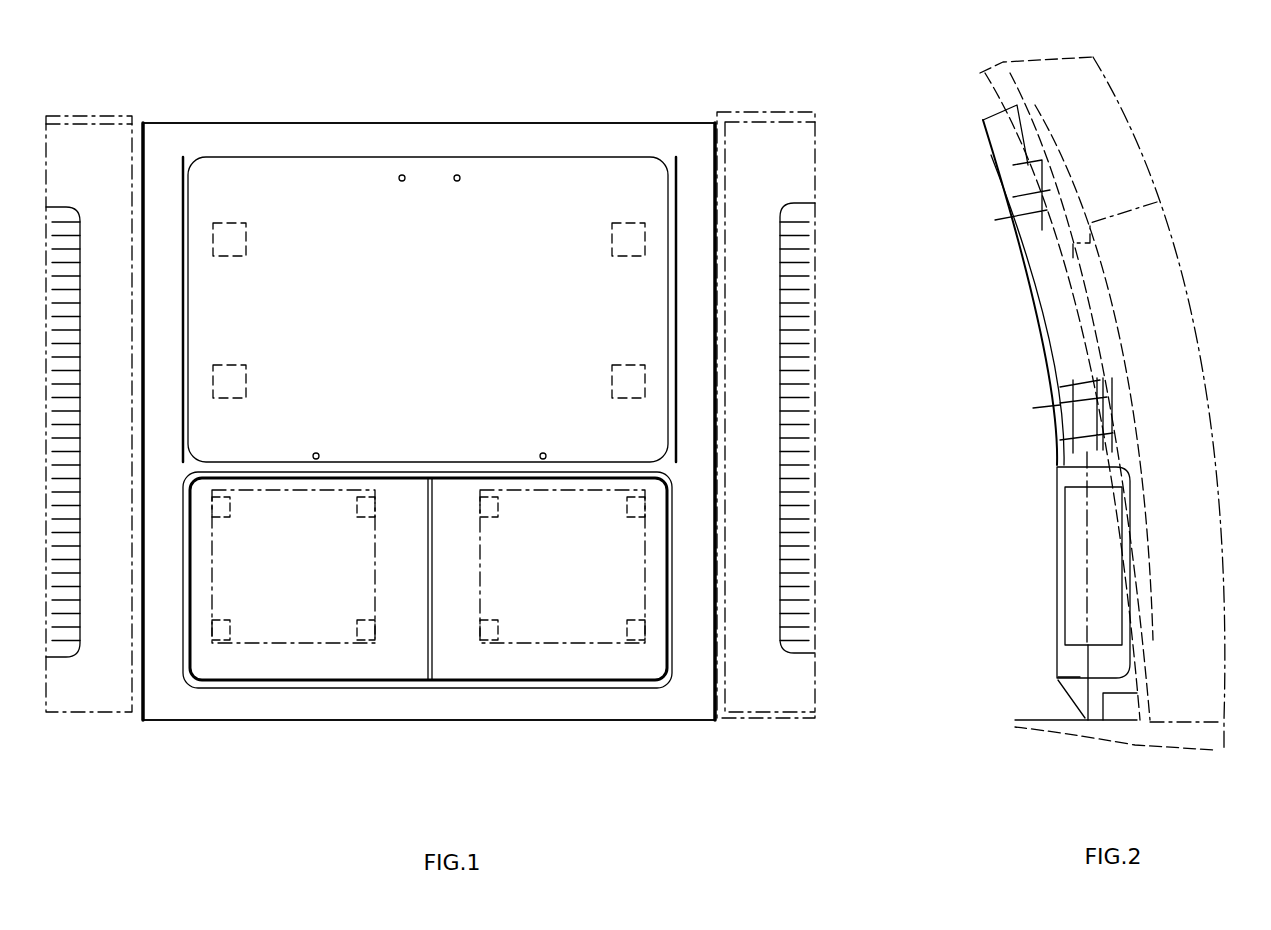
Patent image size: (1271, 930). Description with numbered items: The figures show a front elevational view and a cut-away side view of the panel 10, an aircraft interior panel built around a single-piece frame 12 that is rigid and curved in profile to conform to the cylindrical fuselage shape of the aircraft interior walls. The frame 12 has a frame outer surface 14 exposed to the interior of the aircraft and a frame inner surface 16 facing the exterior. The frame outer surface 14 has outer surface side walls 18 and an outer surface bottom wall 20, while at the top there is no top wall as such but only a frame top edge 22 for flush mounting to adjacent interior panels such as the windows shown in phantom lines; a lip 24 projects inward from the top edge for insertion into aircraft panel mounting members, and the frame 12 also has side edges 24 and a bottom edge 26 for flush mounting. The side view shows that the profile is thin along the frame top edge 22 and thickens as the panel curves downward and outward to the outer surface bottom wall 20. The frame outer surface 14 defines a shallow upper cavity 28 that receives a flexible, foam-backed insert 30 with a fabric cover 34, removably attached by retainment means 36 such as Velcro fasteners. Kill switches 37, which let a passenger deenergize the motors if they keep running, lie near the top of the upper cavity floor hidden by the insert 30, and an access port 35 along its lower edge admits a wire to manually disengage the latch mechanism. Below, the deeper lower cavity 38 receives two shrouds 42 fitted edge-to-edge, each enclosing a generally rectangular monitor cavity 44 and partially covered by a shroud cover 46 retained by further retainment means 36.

In FIG. 1, the panel 10 is at (692, 106).
In FIG. 2, the panel 10 is at (966, 168).
In FIG. 1, the frame 12 is at (687, 697).
In FIG. 2, the frame 12 is at (997, 130).
In FIG. 2, the frame outer surface 14 is at (1030, 293).
In FIG. 2, the frame inner surface 16 is at (1052, 345).
In FIG. 1, the outer surface side walls 18 is at (690, 472).
In FIG. 1, the outer surface bottom wall 20 is at (365, 704).
In FIG. 2, the outer surface bottom wall 20 is at (1073, 690).
In FIG. 1, the frame top edge 22 is at (588, 137).
In FIG. 1, the side edges 24 is at (717, 570).
In FIG. 2, the side edges 24 is at (993, 113).
In FIG. 1, the bottom edge 26 is at (150, 722).
In FIG. 2, the upper cavity 28 is at (1123, 398).
In FIG. 1, the insert 30 is at (418, 354).
In FIG. 1, the fabric cover 34 is at (427, 293).
In FIG. 1, the access port 35 is at (317, 452).
In FIG. 1, the retainment means 36 is at (638, 495).
In FIG. 1, the kill switches 37 is at (456, 175).
In FIG. 2, the lower cavity 38 is at (1115, 670).
In FIG. 1, the shroud 42 is at (270, 603).
In FIG. 2, the shroud 42 is at (1068, 477).
In FIG. 2, the monitor cavity 44 is at (1078, 570).
In FIG. 1, the shroud cover 46 is at (275, 582).
In FIG. 2, the shroud cover 46 is at (1057, 548).